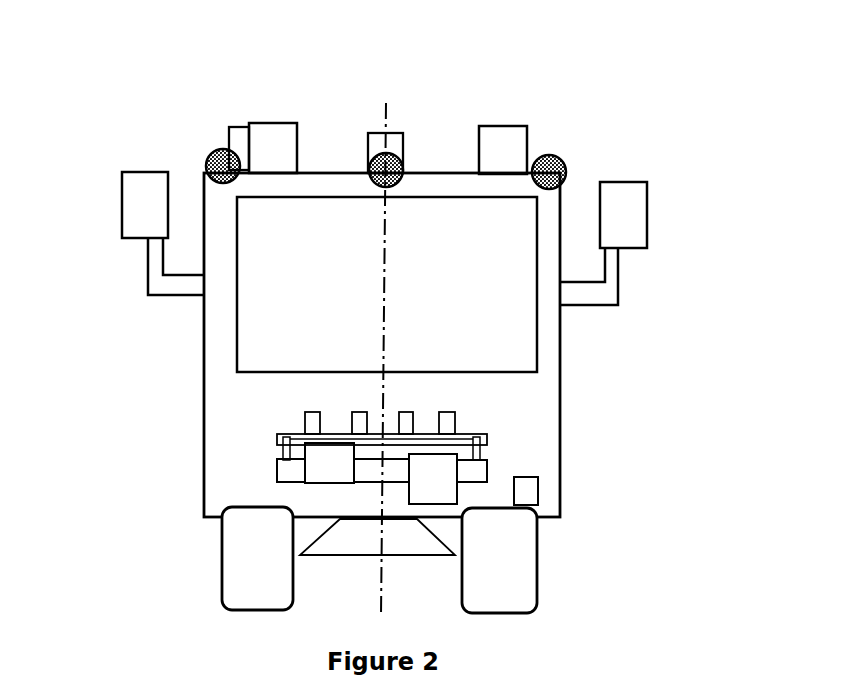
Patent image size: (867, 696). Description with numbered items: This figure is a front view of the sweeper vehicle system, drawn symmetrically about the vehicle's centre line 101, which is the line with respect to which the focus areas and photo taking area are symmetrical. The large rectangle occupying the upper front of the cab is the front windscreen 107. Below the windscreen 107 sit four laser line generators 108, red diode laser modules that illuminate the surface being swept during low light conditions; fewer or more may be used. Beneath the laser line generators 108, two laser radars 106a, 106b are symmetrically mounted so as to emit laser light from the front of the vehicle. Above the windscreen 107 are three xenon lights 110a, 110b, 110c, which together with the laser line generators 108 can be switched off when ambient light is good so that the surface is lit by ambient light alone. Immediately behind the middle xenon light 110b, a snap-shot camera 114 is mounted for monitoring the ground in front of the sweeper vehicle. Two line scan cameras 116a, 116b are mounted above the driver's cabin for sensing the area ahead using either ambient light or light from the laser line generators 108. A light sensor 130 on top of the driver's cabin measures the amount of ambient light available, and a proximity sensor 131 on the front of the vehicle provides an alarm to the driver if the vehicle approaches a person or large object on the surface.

The centre line 101 is at (372, 294).
The front windscreen 107 is at (480, 351).
The laser line generator 108 is at (323, 404).
The laser radar 106a is at (325, 473).
The laser radar 106b is at (447, 488).
The proximity sensor 131 is at (542, 494).
The light sensor 130 is at (226, 121).
The line scan camera 116a is at (261, 120).
The line scan camera 116b is at (510, 151).
The snap-shot camera 114 is at (366, 125).
The xenon light 110a is at (214, 149).
The xenon light 110b is at (410, 160).
The xenon light 110c is at (568, 167).